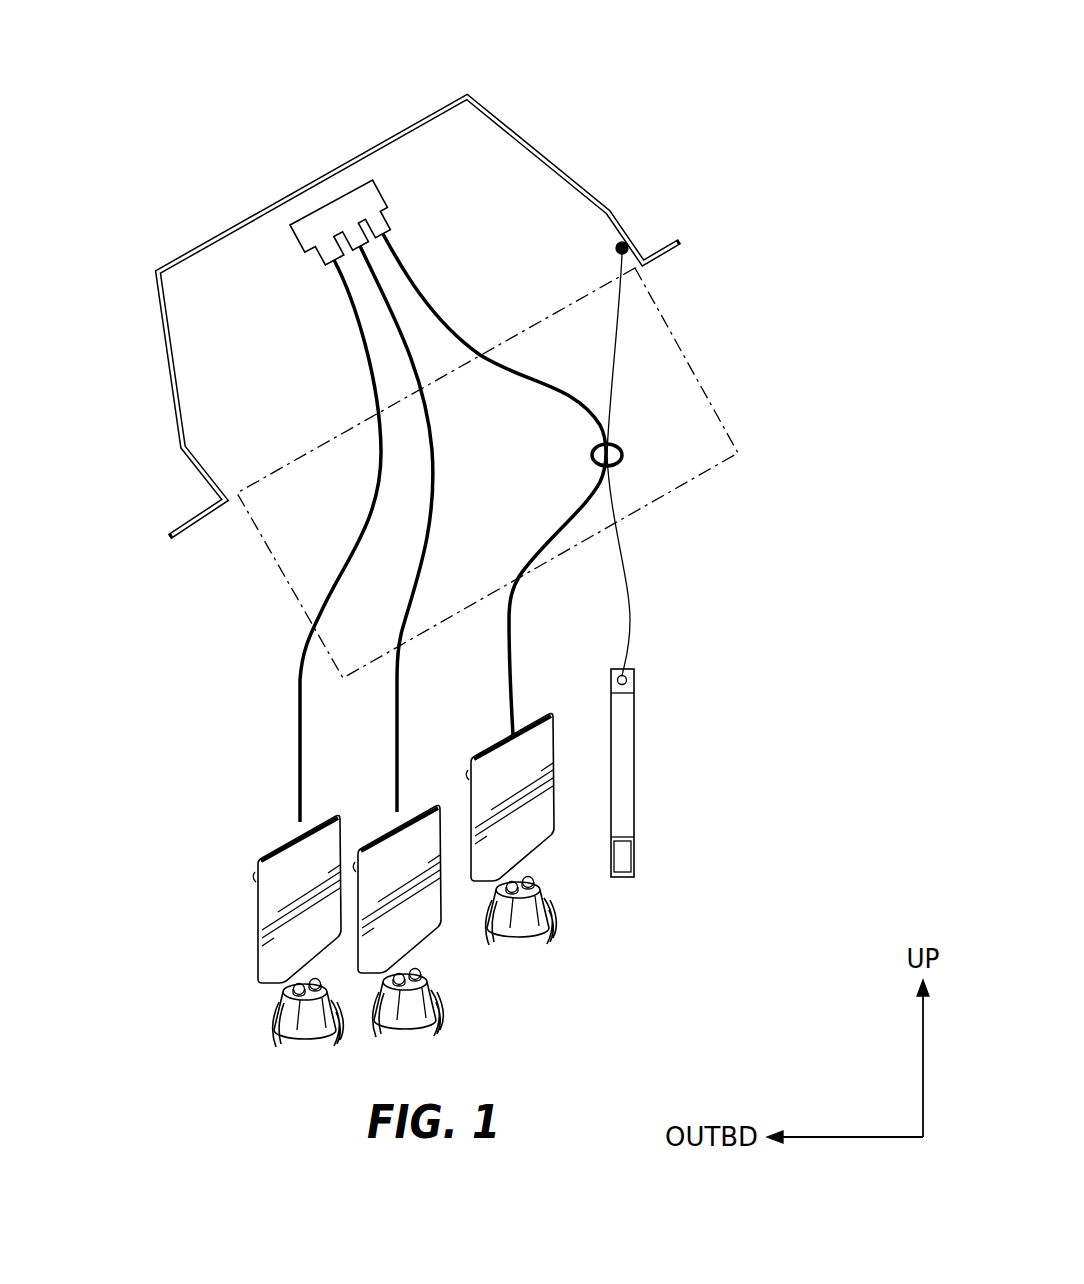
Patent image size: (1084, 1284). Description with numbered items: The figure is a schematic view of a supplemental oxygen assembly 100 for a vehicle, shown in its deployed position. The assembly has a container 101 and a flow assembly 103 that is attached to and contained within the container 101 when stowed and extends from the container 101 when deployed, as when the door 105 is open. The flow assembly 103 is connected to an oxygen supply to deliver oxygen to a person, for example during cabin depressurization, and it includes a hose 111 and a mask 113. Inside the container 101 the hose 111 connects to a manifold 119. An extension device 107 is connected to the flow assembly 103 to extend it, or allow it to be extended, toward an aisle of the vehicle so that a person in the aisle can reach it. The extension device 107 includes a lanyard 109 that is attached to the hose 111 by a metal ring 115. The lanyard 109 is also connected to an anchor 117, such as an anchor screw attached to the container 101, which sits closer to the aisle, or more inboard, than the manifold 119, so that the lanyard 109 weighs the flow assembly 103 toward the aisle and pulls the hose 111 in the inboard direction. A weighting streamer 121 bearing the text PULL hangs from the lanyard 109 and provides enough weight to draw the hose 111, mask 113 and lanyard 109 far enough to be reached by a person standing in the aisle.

The supplemental oxygen assembly 100 is at (629, 46).
The container 101 is at (181, 447).
The flow assembly 103 is at (526, 498).
The door 105 is at (672, 497).
The extension device 107 is at (652, 391).
The lanyard 109 is at (637, 637).
The hose 111 is at (296, 754).
The mask 113 is at (251, 892).
The metal ring 115 is at (632, 452).
The anchor 117 is at (625, 237).
The manifold 119 is at (322, 207).
The weighting streamer 121 is at (645, 778).